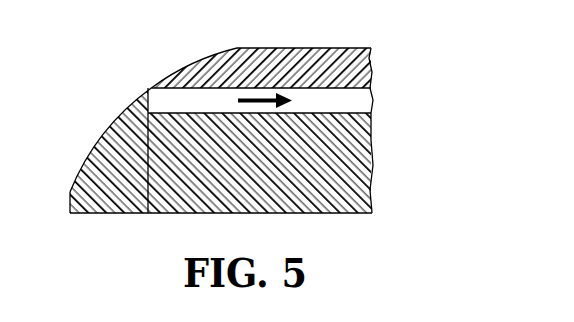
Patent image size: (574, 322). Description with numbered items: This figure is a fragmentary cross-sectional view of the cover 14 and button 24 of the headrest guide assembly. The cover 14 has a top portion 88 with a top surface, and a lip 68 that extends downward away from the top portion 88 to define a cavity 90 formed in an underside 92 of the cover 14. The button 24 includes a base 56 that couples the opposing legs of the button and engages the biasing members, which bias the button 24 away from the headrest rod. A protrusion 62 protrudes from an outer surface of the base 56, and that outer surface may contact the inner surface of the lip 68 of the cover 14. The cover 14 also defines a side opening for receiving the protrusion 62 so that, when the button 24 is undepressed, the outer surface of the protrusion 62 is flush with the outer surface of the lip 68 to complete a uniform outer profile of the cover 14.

The cover 14 is at (311, 48).
The top portion 88 is at (263, 65).
The underside 92 is at (347, 90).
The cavity 90 is at (347, 102).
The base 56 is at (303, 165).
The lip 68 is at (107, 130).
The protrusion 62 is at (125, 172).
The button 24 is at (184, 213).